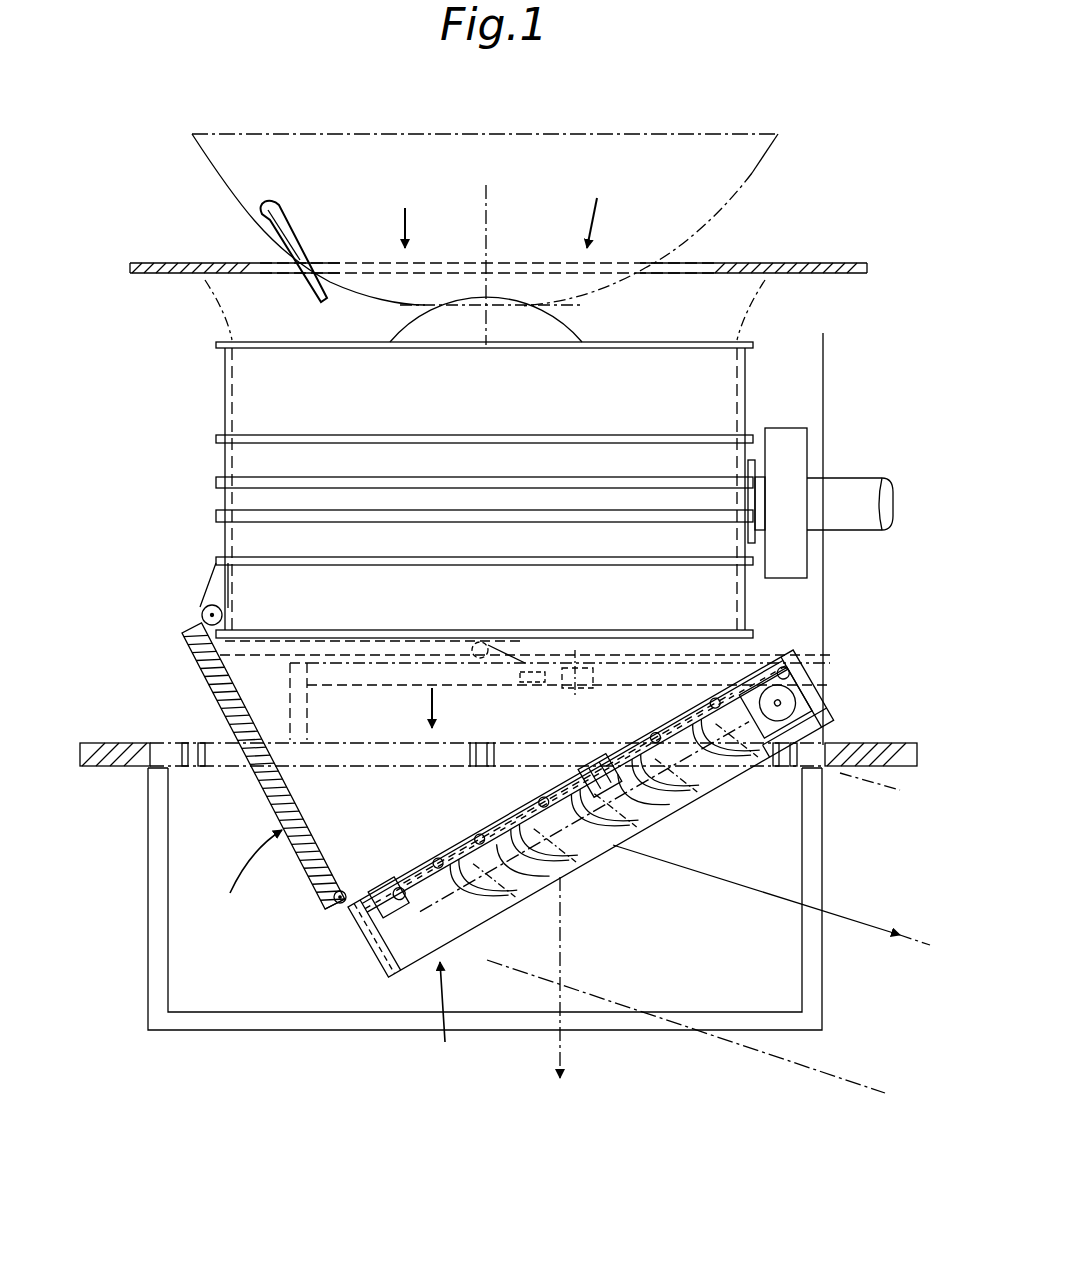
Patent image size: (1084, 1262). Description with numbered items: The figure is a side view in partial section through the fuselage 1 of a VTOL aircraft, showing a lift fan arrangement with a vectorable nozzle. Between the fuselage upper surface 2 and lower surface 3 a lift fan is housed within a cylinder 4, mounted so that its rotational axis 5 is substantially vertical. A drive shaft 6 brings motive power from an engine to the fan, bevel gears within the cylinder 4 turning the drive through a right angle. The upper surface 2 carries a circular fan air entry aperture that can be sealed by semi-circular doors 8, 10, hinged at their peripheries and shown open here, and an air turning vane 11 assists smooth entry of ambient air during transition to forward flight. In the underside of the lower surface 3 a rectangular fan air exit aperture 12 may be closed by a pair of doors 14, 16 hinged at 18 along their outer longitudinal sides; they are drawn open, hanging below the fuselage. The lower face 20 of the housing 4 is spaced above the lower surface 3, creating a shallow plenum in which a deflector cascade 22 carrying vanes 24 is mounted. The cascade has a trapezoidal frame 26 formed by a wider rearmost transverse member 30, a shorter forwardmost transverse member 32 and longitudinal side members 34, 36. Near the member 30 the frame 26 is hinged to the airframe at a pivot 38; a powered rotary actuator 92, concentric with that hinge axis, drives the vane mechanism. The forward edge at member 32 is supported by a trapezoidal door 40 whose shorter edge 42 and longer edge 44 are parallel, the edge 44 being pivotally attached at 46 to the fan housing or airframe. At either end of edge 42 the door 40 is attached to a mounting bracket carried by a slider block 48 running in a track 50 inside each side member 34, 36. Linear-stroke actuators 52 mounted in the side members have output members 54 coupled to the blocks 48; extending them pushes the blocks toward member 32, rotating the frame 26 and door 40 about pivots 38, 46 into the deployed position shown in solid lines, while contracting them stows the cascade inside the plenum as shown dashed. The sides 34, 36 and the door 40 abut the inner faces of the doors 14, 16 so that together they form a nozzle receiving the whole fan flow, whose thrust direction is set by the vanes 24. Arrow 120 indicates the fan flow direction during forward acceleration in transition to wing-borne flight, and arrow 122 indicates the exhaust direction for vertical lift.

The fuselage 1 is at (905, 775).
The upper surface 2 is at (700, 266).
The lower surface 3 is at (120, 770).
The cylinder 4 is at (410, 411).
The rotational axis 5 is at (492, 232).
The drive shaft 6 is at (861, 484).
The door 8 is at (717, 186).
The door 10 is at (514, 256).
The air turning vane 11 is at (268, 216).
The fan air exit aperture 12 is at (451, 708).
The door 14 is at (148, 1000).
The door 16 is at (450, 890).
The hinge 18 is at (215, 770).
The lower face 20 is at (525, 690).
The deflector cascade 22 is at (642, 872).
The vanes 24 is at (572, 873).
The frame 26 is at (445, 1020).
The transverse edge member 30 is at (830, 716).
The transverse edge member 32 is at (372, 968).
The side edge member 34 is at (445, 860).
The side edge member 36 is at (575, 787).
The pivot 38 is at (790, 678).
The door 40 is at (244, 866).
The edge 42 is at (333, 904).
The edge 44 is at (186, 630).
The pivot 46 is at (222, 612).
The slider block 48 is at (386, 884).
The track 50 is at (521, 906).
The linear-stroke actuator 52 is at (688, 722).
The output member 54 is at (583, 823).
The rotary actuator 92 is at (800, 702).
The arrow 120 is at (850, 915).
The arrow 122 is at (565, 1047).